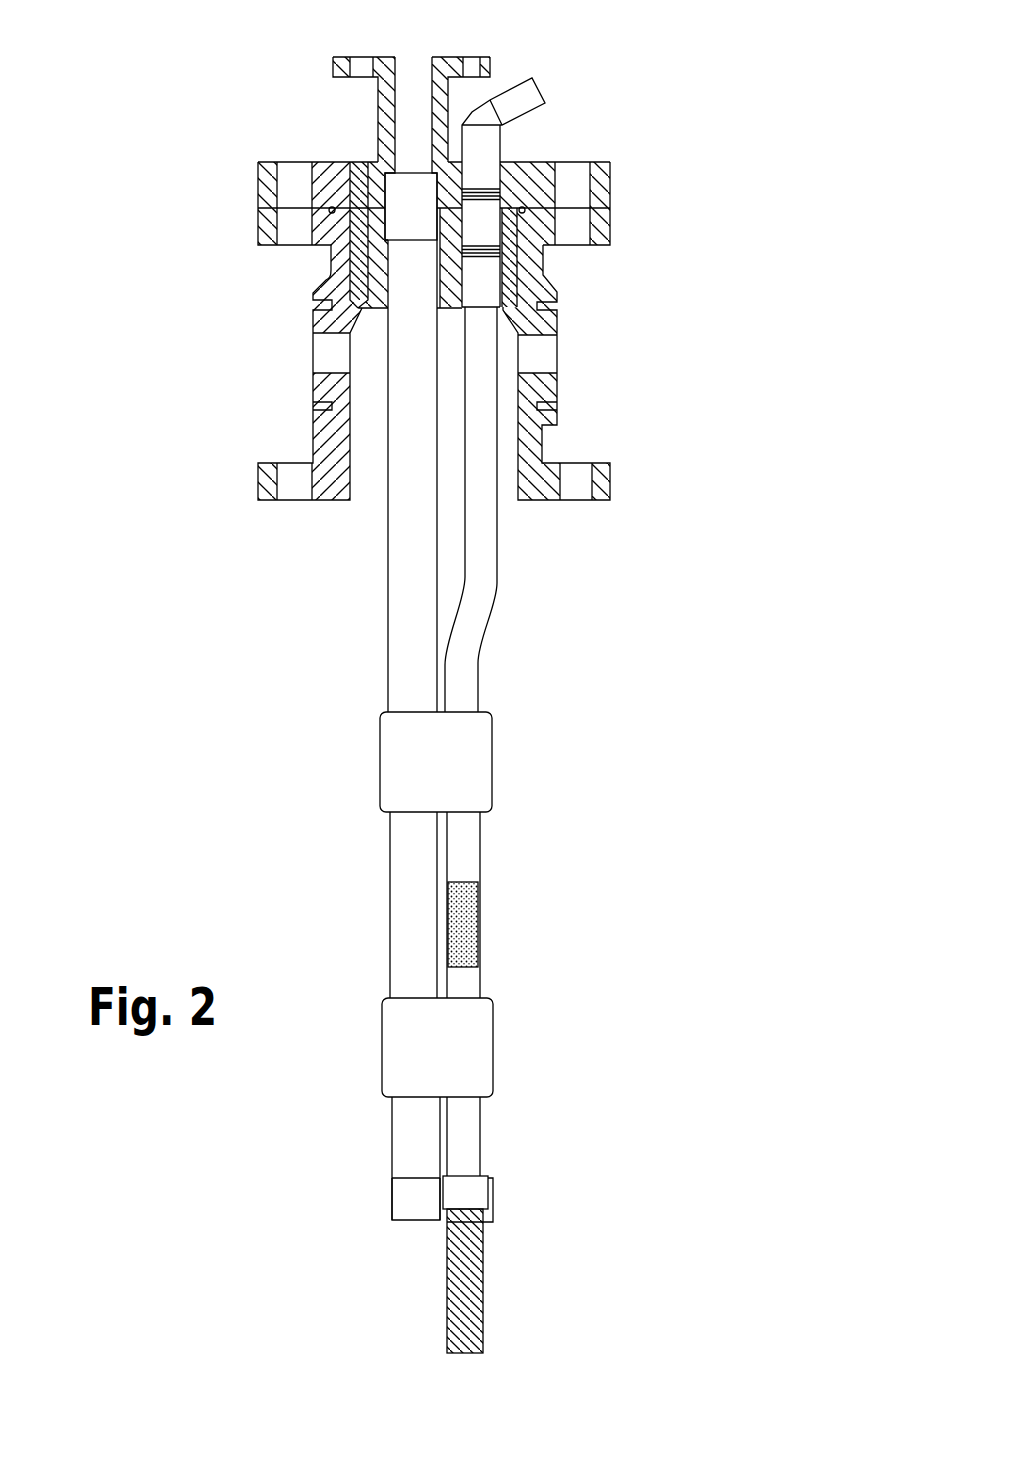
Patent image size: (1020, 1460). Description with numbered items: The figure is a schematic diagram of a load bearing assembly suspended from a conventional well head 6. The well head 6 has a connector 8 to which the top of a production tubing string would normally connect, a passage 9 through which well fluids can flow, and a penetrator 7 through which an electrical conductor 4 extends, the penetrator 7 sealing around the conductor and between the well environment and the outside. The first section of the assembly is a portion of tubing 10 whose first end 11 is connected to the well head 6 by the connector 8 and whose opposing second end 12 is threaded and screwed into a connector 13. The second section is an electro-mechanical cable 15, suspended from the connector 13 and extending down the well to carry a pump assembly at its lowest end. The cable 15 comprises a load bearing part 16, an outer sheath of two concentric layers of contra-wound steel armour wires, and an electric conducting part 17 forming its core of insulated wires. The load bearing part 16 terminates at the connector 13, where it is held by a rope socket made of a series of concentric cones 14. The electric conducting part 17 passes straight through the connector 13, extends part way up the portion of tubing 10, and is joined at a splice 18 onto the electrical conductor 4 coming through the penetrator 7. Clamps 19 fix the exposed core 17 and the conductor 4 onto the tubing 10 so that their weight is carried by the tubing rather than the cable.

The electrical conductor 4 is at (482, 545).
The well head 6 is at (265, 226).
The penetrator 7 is at (497, 146).
The connector 8 is at (358, 228).
The passage 9 is at (412, 72).
The portion of tubing 10 is at (412, 645).
The first end 11 is at (407, 272).
The second end 12 is at (417, 1170).
The connector 13 is at (417, 1202).
The concentric cones 14 is at (467, 1192).
The electro-mechanical cable 15 is at (465, 1310).
The load bearing part 16 is at (487, 1263).
The electric conducting part 17 is at (468, 1120).
The splice 18 is at (468, 928).
The clamps 19 is at (452, 758).